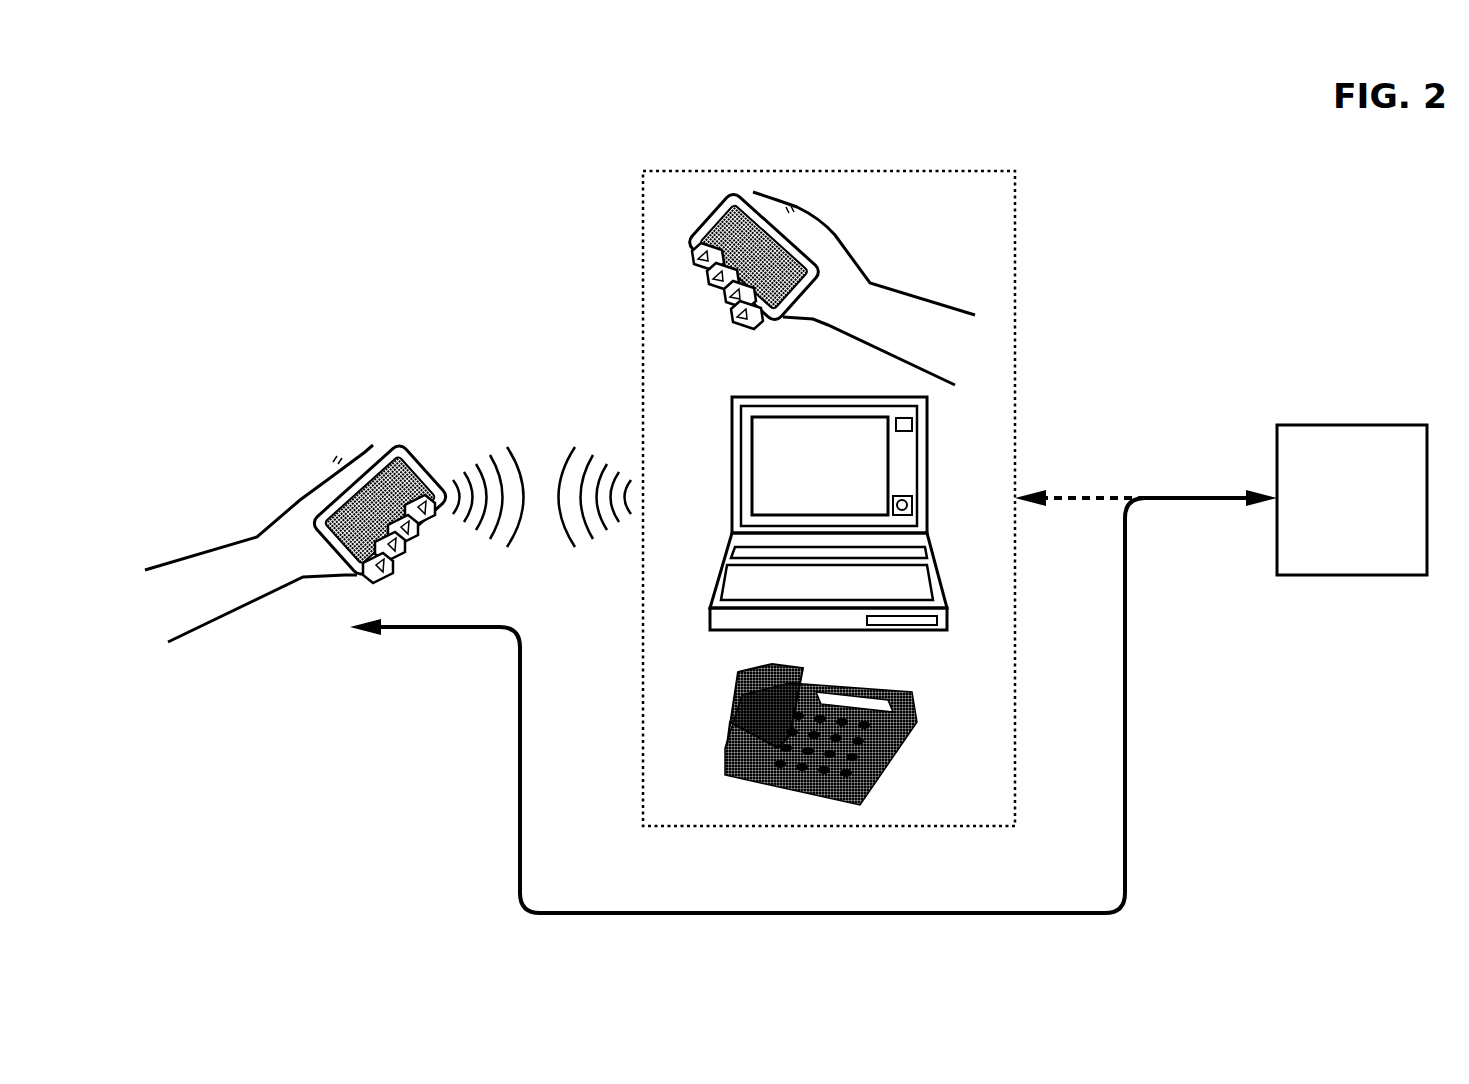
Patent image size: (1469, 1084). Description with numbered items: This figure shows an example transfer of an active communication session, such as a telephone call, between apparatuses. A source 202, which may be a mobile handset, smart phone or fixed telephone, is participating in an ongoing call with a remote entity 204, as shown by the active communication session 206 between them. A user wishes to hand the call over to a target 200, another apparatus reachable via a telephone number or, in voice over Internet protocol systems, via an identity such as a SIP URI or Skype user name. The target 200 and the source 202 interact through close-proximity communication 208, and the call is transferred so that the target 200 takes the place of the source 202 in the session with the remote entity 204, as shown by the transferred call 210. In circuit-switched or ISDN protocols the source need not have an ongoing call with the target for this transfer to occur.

The target 200 is at (293, 542).
The source 202 is at (801, 507).
The remote entity 204 is at (1325, 493).
The communication session 206 is at (1080, 468).
The close-proximity communication 208 is at (537, 499).
The transferred call 210 is at (813, 701).